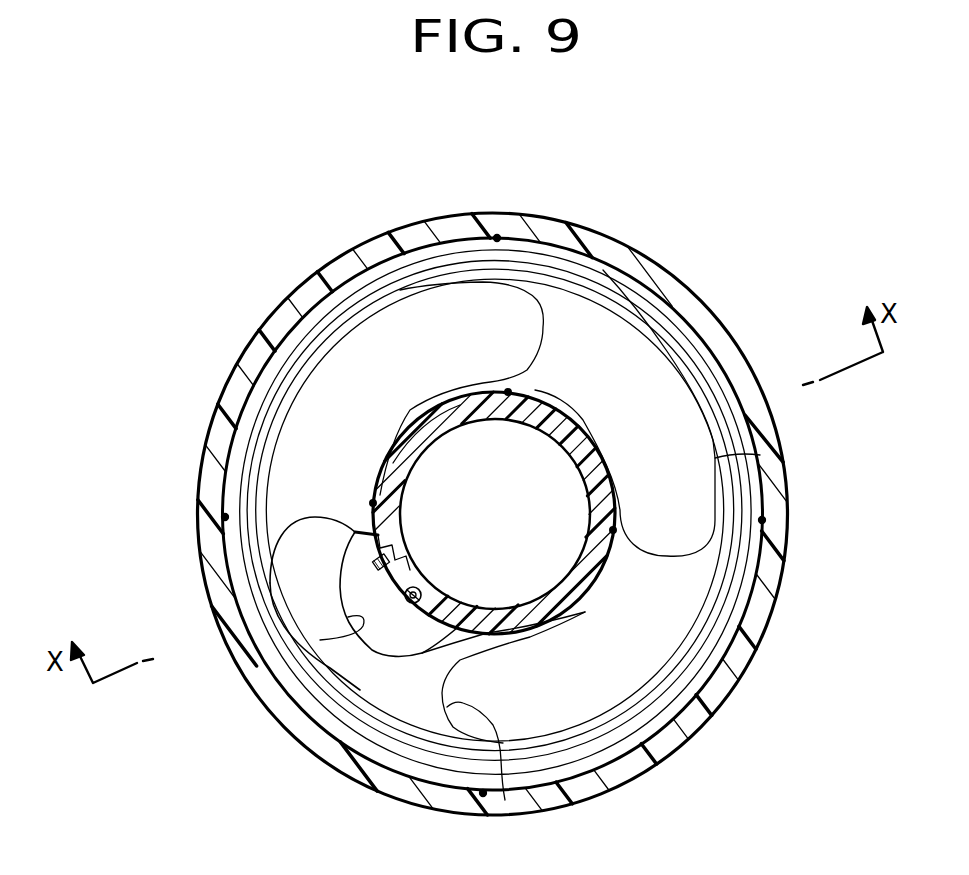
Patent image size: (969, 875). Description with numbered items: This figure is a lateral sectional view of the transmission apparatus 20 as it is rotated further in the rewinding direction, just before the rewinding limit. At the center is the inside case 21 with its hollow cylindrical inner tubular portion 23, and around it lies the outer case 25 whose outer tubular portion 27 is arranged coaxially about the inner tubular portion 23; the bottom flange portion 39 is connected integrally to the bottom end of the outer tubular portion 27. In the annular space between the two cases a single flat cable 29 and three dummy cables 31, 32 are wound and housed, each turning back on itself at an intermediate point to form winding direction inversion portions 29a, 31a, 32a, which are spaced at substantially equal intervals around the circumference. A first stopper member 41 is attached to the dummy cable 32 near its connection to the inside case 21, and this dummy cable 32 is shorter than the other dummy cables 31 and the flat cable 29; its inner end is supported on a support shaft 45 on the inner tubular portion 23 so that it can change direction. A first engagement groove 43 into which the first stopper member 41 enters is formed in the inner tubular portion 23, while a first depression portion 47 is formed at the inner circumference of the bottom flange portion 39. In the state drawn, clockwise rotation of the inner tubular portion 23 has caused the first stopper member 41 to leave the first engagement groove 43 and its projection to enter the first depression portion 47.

The transmission apparatus 20 is at (266, 272).
The inside case 21 is at (586, 539).
The inner tubular portion 23 is at (563, 440).
The outer case 25 is at (738, 330).
The outer tubular portion 27 is at (690, 302).
The flat cable 29 is at (772, 470).
The winding direction inversion portion 29a is at (673, 553).
The dummy cables 31 is at (424, 290).
The winding direction inversion portions 31a is at (543, 315).
The dummy cable 32 is at (275, 538).
The winding direction inversion portion 32a is at (308, 520).
The bottom flange portion 39 is at (603, 343).
The first stopper member 41 is at (378, 563).
The first engagement groove 43 is at (392, 556).
The support shaft 45 is at (410, 607).
The first depression portion 47 is at (348, 617).